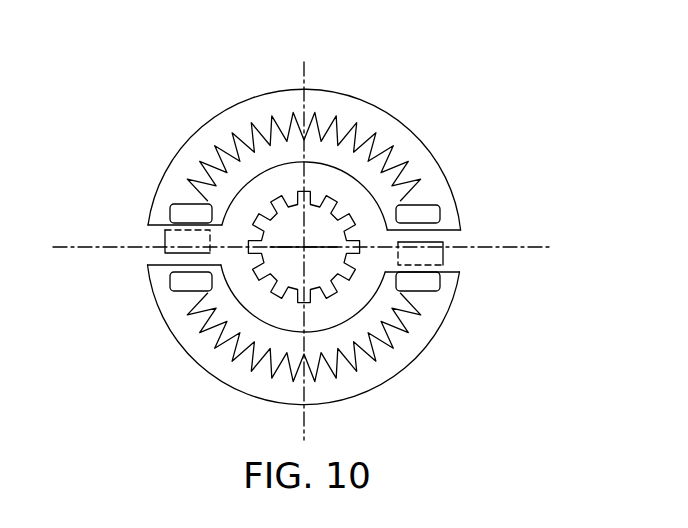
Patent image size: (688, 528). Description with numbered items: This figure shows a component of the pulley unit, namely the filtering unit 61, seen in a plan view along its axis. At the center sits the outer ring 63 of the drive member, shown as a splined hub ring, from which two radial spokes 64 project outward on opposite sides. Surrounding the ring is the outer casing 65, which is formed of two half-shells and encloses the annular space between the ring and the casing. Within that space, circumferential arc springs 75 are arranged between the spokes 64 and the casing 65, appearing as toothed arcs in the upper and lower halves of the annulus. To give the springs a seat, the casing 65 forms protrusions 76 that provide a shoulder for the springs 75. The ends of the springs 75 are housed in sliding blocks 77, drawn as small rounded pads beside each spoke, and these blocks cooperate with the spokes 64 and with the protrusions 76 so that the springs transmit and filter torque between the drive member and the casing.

The filtering unit 61 is at (500, 101).
The outer ring 63 is at (353, 198).
The radial spokes 64 is at (172, 228).
The outer casing 65 is at (163, 346).
The circumferential arc springs 75 is at (208, 162).
The protrusions 76 is at (160, 255).
The sliding blocks 77 is at (175, 217).